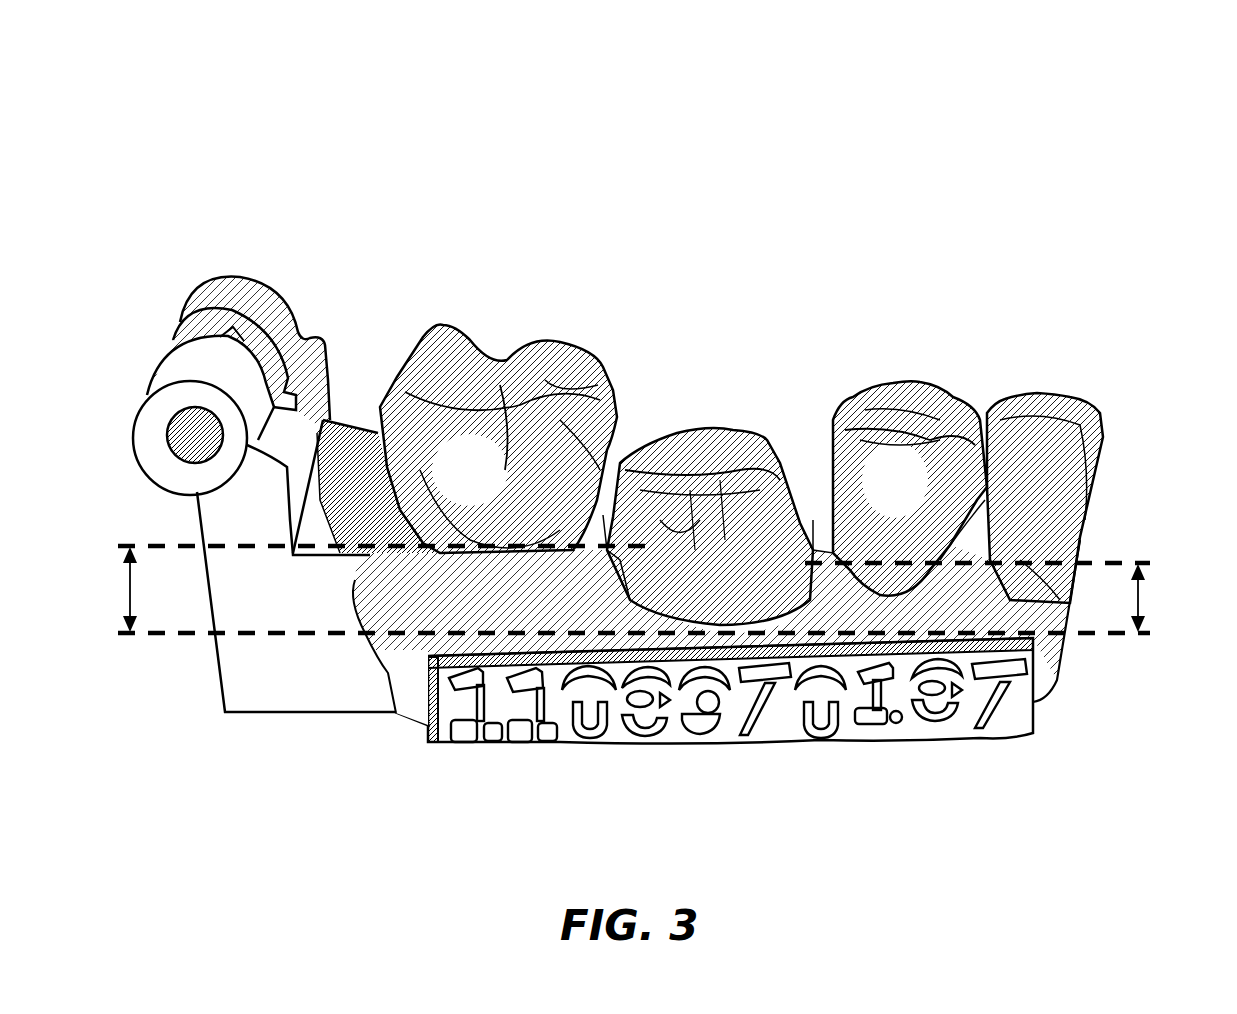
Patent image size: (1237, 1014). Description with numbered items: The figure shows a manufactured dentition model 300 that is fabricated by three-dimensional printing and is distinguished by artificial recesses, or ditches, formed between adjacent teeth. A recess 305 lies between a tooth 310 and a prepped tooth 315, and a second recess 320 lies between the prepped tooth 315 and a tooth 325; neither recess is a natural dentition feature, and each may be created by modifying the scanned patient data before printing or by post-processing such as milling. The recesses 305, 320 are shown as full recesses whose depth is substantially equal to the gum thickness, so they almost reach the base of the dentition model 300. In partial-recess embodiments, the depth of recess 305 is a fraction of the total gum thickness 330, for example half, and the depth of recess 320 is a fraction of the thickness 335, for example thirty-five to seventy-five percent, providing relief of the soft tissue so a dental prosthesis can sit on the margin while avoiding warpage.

The dentition model 300 is at (628, 382).
The recess 305 is at (610, 520).
The tooth 310 is at (440, 326).
The prepped tooth 315 is at (720, 427).
The recess 320 is at (813, 520).
The tooth 325 is at (923, 380).
The total gum thickness 330 is at (125, 594).
The thickness 335 is at (1140, 597).